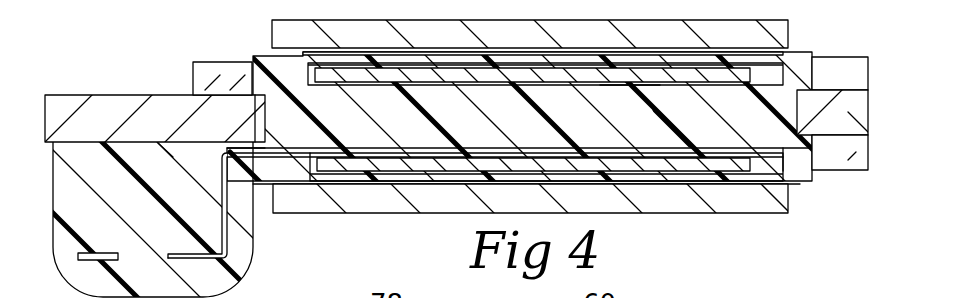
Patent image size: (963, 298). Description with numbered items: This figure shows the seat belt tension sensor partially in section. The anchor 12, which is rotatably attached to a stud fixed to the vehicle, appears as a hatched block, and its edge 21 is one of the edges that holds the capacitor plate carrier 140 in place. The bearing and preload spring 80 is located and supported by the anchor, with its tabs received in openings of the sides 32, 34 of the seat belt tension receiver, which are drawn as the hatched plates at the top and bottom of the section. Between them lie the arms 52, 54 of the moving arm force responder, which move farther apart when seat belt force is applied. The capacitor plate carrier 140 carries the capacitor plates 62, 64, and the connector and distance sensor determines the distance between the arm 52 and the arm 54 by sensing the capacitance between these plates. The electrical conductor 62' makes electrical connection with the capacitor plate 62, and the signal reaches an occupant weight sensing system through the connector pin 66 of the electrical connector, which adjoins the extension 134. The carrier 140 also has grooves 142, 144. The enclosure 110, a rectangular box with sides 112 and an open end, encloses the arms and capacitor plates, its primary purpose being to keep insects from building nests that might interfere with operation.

The anchor 12 is at (70, 95).
The edge 21 is at (267, 125).
The side 32 is at (698, 200).
The side 34 is at (273, 28).
The arm 52 is at (403, 172).
The arm 54 is at (400, 85).
The capacitor plate 62 is at (656, 127).
The electrical conductor 62' is at (475, 219).
The capacitor plate 64 is at (630, 86).
The connector pin 66 is at (88, 253).
The bearing and preload spring 80 is at (193, 82).
The enclosure 110 is at (804, 198).
The sides 112 is at (476, 70).
The extension 134 is at (120, 197).
The capacitor plate carrier 140 is at (525, 128).
The groove 142 is at (233, 115).
The groove 144 is at (798, 112).